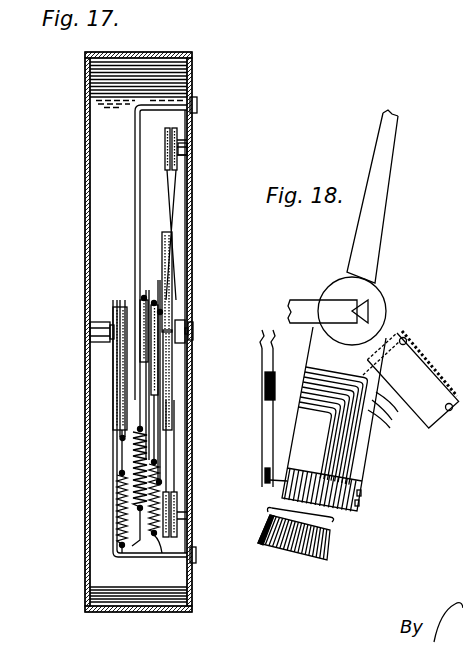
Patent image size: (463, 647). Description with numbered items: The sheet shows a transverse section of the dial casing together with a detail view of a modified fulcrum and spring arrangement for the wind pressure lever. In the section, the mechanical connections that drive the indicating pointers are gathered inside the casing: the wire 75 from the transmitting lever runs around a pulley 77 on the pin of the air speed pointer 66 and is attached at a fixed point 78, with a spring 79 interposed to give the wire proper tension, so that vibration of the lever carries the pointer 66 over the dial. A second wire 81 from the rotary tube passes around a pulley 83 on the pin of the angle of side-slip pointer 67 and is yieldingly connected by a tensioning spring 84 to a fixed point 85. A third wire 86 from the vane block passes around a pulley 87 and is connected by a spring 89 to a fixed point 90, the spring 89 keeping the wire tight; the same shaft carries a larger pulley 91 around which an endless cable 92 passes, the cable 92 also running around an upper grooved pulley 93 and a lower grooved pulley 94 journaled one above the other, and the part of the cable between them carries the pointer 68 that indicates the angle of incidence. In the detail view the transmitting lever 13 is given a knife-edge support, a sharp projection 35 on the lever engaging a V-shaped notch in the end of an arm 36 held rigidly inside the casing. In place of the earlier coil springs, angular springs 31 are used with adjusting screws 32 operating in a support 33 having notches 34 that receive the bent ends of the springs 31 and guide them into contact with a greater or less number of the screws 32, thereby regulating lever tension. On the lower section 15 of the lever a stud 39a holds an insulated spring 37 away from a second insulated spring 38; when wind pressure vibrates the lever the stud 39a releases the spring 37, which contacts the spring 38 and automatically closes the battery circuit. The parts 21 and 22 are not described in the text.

In FIG. 18, the transmitting lever 13 is at (380, 220).
In FIG. 18, the lower section of the transmitting lever 15 is at (312, 350).
In FIG. 18, the wire connector 21 is at (336, 520).
In FIG. 18, the brush segment 22 is at (330, 553).
In FIG. 18, the angular springs 31 is at (340, 462).
In FIG. 18, the adjusting screws 32 is at (412, 346).
In FIG. 18, the support 33 is at (418, 395).
In FIG. 18, the notches 34 is at (366, 375).
In FIG. 18, the sharp projection 35 is at (369, 311).
In FIG. 18, the arm 36 is at (320, 300).
In FIG. 18, the insulated spring 37 is at (267, 415).
In FIG. 18, the insulated spring 38 is at (273, 403).
In FIG. 18, the stud 39a is at (283, 482).
In FIG. 17, the pointer 66 is at (133, 237).
In FIG. 17, the angle of side-slip pointer 67 is at (113, 540).
In FIG. 17, the pointer 68 is at (195, 331).
In FIG. 17, the wire 75 is at (148, 384).
In FIG. 17, the pulley 77 is at (150, 303).
In FIG. 17, the fixed attachment point 78 is at (138, 510).
In FIG. 17, the spring 79 is at (138, 452).
In FIG. 17, the wire 81 is at (161, 404).
In FIG. 17, the pulley 83 is at (113, 356).
In FIG. 17, the tensioning spring 84 is at (118, 495).
In FIG. 17, the fixed point 85 is at (121, 548).
In FIG. 17, the wire 86 is at (160, 366).
In FIG. 17, the pulley 87 is at (161, 314).
In FIG. 17, the spring 89 is at (155, 472).
In FIG. 17, the fixed point 90 is at (163, 522).
In FIG. 17, the larger pulley 91 is at (172, 256).
In FIG. 17, the endless cable 92 is at (178, 201).
In FIG. 17, the upper grooved pulley 93 is at (178, 143).
In FIG. 17, the lower grooved pulley 94 is at (178, 528).